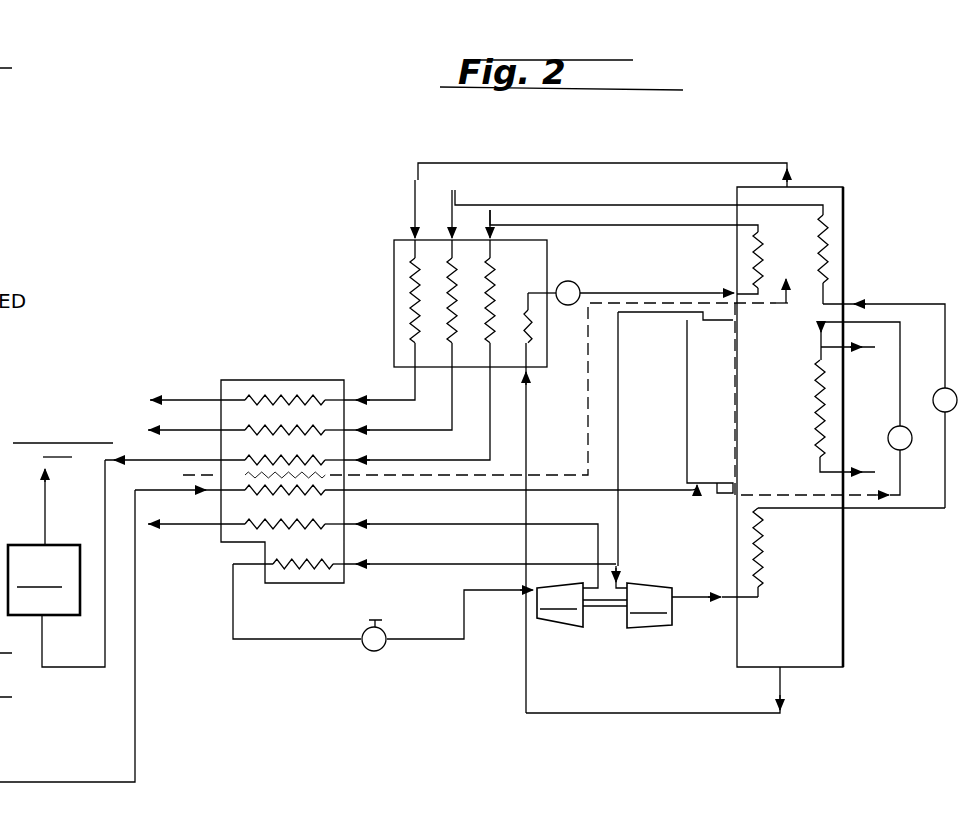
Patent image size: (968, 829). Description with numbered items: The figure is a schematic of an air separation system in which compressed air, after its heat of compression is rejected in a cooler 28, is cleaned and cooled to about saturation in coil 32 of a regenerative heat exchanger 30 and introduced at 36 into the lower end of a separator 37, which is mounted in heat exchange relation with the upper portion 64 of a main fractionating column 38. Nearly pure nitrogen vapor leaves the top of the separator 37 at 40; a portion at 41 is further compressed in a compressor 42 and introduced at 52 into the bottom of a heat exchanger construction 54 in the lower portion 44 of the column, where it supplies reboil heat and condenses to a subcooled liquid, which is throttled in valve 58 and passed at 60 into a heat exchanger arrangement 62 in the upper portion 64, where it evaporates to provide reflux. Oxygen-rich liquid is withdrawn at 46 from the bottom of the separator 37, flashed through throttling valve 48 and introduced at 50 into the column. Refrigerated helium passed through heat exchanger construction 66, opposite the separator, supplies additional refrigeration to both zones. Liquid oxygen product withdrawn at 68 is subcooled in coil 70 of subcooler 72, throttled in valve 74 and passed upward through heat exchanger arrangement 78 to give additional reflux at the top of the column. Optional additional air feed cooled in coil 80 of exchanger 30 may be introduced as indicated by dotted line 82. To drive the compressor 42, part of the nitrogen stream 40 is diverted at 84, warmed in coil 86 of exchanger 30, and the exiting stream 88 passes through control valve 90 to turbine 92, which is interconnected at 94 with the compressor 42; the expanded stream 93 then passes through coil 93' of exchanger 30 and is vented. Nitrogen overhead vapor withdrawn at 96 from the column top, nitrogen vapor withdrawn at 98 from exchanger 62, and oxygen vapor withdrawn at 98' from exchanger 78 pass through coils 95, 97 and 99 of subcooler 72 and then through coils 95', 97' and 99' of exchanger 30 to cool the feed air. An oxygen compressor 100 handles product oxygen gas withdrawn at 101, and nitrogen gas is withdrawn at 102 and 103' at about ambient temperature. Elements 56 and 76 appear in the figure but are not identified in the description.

The cooler 28 is at (13, 737).
The regenerative heat exchanger 30 is at (250, 377).
The coil 32 is at (305, 493).
The air feed inlet 36 is at (697, 496).
The separator 37 is at (687, 407).
The main fractionating column 38 is at (847, 281).
The nitrogen vapor withdrawal 40 is at (620, 280).
The nitrogen gas portion 41 is at (619, 572).
The compressor 42 is at (648, 630).
The lower portion of fractionating column 44 is at (845, 577).
The oxygen-rich liquid withdrawal 46 is at (722, 500).
The throttling valve 48 is at (908, 447).
The flashed fluid inlet 50 is at (821, 324).
The compressed nitrogen inlet 52 is at (705, 599).
The heat exchanger construction 54 is at (765, 588).
The line 56 is at (885, 509).
The throttling valve 58 is at (942, 387).
The cooled nitrogen liquid 60 is at (902, 305).
The heat exchanger arrangement 62 is at (828, 240).
The upper portion of fractionating column 64 is at (845, 208).
The heat exchanger construction 66 is at (815, 385).
The oxygen product withdrawal 68 is at (668, 713).
The coil 70 is at (530, 348).
The heat exchanger 72 is at (399, 236).
The throttling valve 74 is at (578, 280).
The line 76 is at (697, 292).
The heat exchanger arrangement 78 is at (762, 250).
The coil 80 is at (240, 490).
The dotted line 82 is at (585, 472).
The diverted nitrogen stream 84 is at (582, 566).
The coil 86 is at (283, 584).
The warmed nitrogen stream 88 is at (290, 639).
The control valve 90 is at (385, 648).
The turbine 92 is at (557, 622).
The expanded nitrogen stream 93 is at (471, 543).
The coil 93' is at (322, 538).
The interconnection 94 is at (605, 608).
The coil 95 is at (382, 328).
The coil 95' is at (294, 372).
The nitrogen overhead vapor withdrawal 96 is at (770, 162).
The coil 97 is at (400, 344).
The coil 97' is at (322, 421).
The nitrogen vapor withdrawal 98 is at (639, 229).
The oxygen vapor withdrawal 98' is at (624, 239).
The coil 99 is at (419, 359).
The coil 99' is at (322, 450).
The oxygen compressor 100 is at (88, 531).
The product oxygen withdrawal 101 is at (105, 485).
The nitrogen gas withdrawal 102 is at (190, 398).
The nitrogen gas withdrawal 103' is at (179, 445).